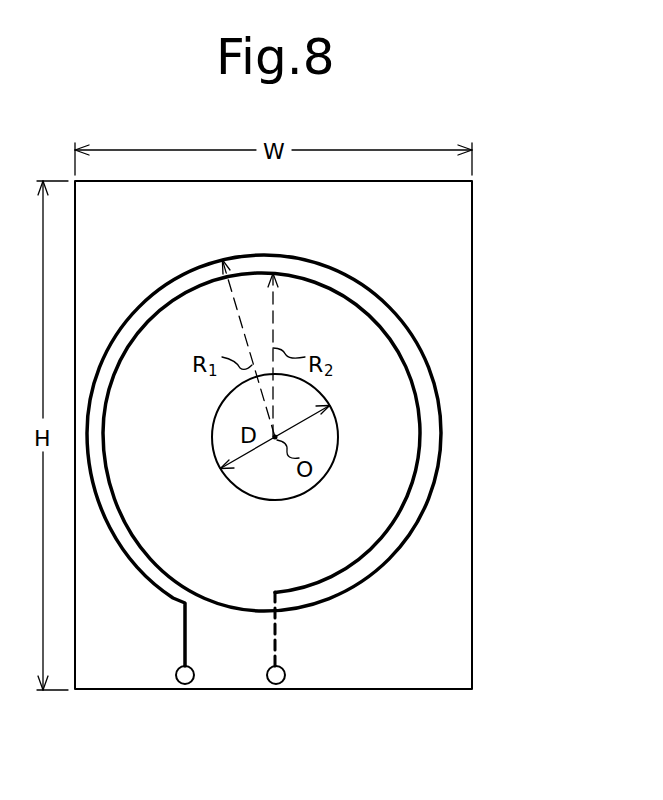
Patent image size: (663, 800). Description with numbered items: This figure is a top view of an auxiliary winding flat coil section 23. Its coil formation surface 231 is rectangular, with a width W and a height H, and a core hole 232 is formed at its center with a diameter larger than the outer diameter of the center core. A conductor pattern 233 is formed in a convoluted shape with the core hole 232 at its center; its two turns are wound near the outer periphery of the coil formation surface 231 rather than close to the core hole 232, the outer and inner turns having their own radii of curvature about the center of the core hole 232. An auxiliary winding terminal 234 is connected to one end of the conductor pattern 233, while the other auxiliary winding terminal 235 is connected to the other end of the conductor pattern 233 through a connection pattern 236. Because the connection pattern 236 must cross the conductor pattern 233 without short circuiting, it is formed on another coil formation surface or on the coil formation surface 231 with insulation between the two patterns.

The auxiliary winding flat coil section 23 is at (311, 469).
The coil formation surface 231 is at (452, 310).
The core hole 232 is at (318, 434).
The conductor pattern 233 is at (431, 367).
The auxiliary winding terminal 234 is at (185, 684).
The auxiliary winding terminal 235 is at (277, 684).
The connection pattern 236 is at (278, 628).